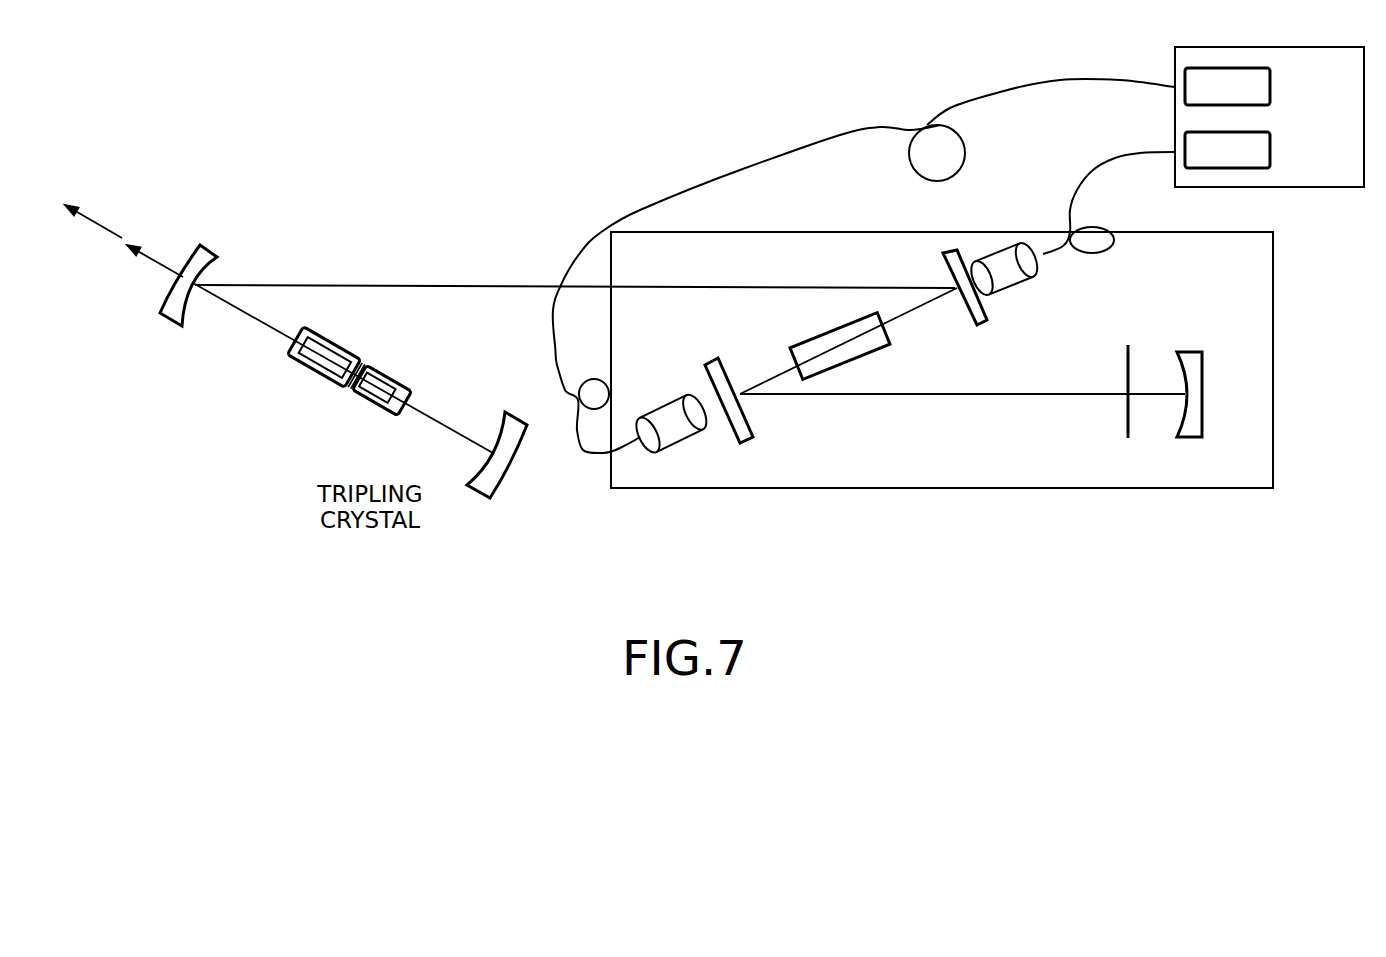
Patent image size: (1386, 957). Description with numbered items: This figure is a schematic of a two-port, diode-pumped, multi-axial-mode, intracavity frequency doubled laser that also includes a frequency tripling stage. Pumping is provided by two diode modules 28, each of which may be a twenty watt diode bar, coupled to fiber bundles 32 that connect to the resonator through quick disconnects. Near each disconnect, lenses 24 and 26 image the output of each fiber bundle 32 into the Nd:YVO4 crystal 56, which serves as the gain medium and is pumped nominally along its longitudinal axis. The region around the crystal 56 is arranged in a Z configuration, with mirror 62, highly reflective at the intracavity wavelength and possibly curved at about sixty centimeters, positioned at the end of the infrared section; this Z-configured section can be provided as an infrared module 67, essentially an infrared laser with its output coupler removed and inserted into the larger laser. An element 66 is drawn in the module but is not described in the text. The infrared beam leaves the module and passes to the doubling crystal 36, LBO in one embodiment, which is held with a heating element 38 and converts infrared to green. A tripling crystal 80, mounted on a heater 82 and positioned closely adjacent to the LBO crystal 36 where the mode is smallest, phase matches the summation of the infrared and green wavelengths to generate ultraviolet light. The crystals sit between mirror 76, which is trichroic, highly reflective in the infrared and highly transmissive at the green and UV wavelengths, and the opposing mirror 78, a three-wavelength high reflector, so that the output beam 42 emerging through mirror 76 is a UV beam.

The lens 24 is at (640, 418).
The lens 26 is at (683, 403).
The diode module 28 is at (1272, 84).
The fiber bundle 32 is at (1087, 113).
The doubling crystal 36 is at (300, 378).
The heating element 38 is at (343, 386).
The output beam 42 is at (150, 253).
The Nd:YVO4 crystal 56 is at (835, 335).
The mirror 62 is at (1206, 365).
The aperture / etalon 66 is at (1127, 426).
The infrared module 67 is at (1227, 487).
The mirror 76 is at (210, 268).
The mirror 78 is at (525, 500).
The tripling crystal 80 is at (366, 400).
The heater 82 is at (396, 410).